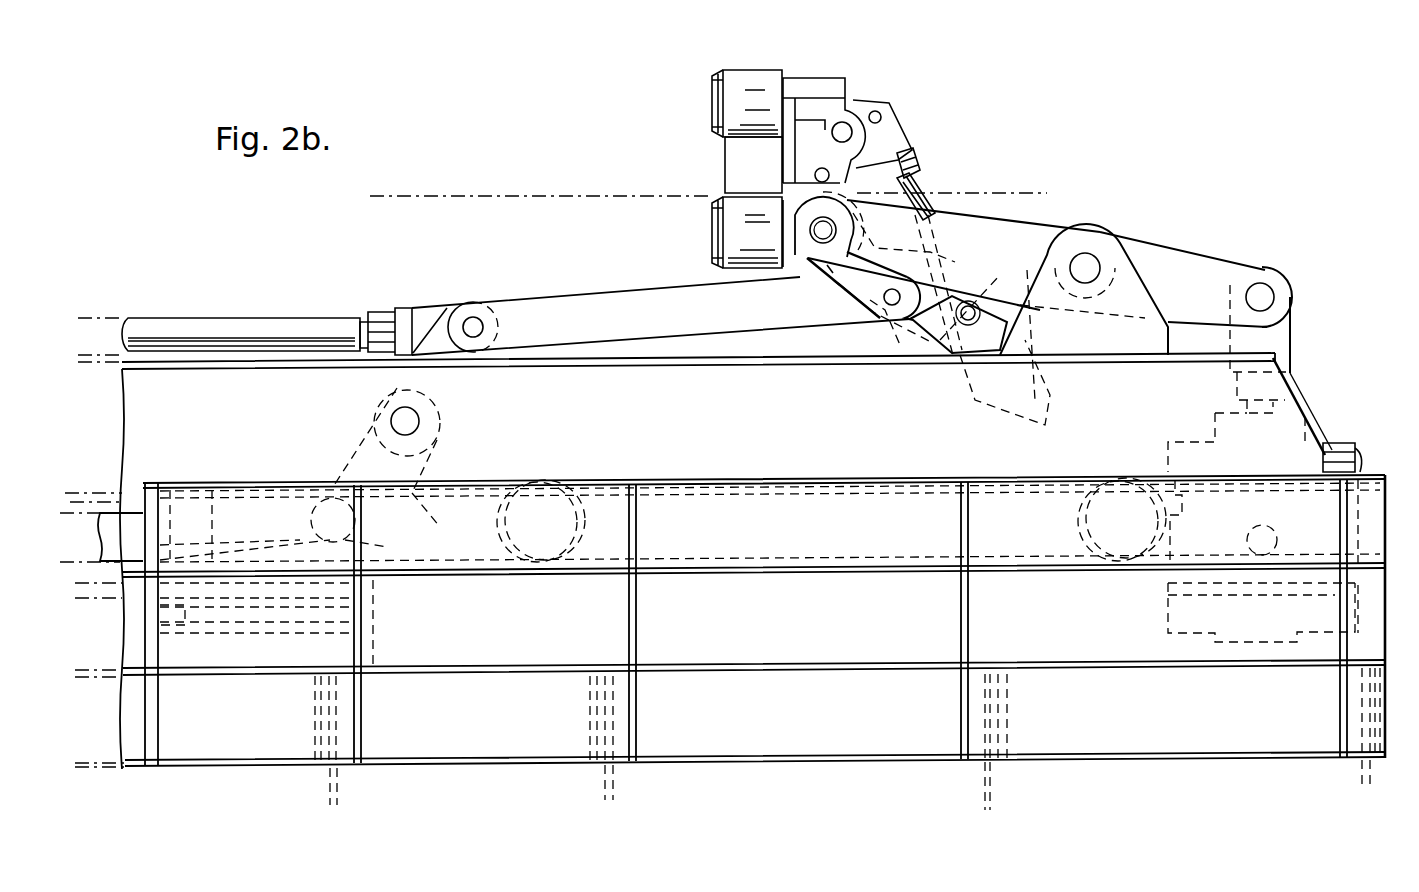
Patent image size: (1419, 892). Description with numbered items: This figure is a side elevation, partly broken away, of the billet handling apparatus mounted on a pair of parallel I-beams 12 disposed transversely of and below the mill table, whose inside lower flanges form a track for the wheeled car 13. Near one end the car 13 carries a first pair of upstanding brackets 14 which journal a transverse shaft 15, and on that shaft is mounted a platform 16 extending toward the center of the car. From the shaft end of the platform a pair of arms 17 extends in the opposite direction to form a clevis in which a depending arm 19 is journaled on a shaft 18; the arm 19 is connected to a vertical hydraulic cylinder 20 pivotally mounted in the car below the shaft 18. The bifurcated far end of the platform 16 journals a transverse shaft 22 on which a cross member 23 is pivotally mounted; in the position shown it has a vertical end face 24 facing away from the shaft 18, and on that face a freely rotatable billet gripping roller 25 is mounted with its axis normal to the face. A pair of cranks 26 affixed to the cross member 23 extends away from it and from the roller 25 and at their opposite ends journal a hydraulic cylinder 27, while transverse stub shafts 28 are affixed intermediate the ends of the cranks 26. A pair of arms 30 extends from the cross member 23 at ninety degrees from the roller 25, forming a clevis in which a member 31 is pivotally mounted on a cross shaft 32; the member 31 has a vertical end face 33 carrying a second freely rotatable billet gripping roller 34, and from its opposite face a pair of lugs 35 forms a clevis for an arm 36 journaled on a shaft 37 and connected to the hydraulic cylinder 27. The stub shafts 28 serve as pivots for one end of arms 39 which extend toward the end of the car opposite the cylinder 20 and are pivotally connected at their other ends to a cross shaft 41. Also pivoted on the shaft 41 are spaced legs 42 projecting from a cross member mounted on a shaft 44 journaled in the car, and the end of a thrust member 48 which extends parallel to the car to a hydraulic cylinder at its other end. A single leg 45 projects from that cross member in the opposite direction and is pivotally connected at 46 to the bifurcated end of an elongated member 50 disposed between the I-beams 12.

The I-beams 12 is at (1330, 455).
The car 13 is at (1290, 430).
The upstanding brackets 14 is at (1100, 245).
The transverse shaft 15 is at (1085, 262).
The platform 16 is at (977, 225).
The arms 17 is at (1180, 258).
The shaft 18 is at (1263, 295).
The depending arm 19 is at (1283, 340).
The vertical hydraulic cylinder 20 is at (1340, 443).
The transverse shaft 22 is at (820, 230).
The cross member 23 is at (797, 253).
The vertical end face 24 is at (782, 243).
The billet gripping roller 25 is at (742, 217).
The cranks 26 is at (833, 270).
The hydraulic cylinder 27 is at (980, 428).
The stub shafts 28 is at (892, 303).
The arms 30 is at (812, 143).
The member 31 is at (857, 97).
The cross shaft 32 is at (830, 175).
The vertical end face 33 is at (782, 90).
The second billet gripping roller 34 is at (757, 80).
The lugs 35 is at (892, 108).
The arm 36 is at (895, 133).
The shaft 37 is at (875, 111).
The arms 39 is at (657, 305).
The cross shaft 41 is at (473, 327).
The legs 42 is at (430, 343).
The shaft 44 is at (405, 421).
The leg 45 is at (437, 523).
The pivot connection 46 is at (340, 530).
The thrust member 48 is at (230, 325).
The elongated member 50 is at (125, 530).